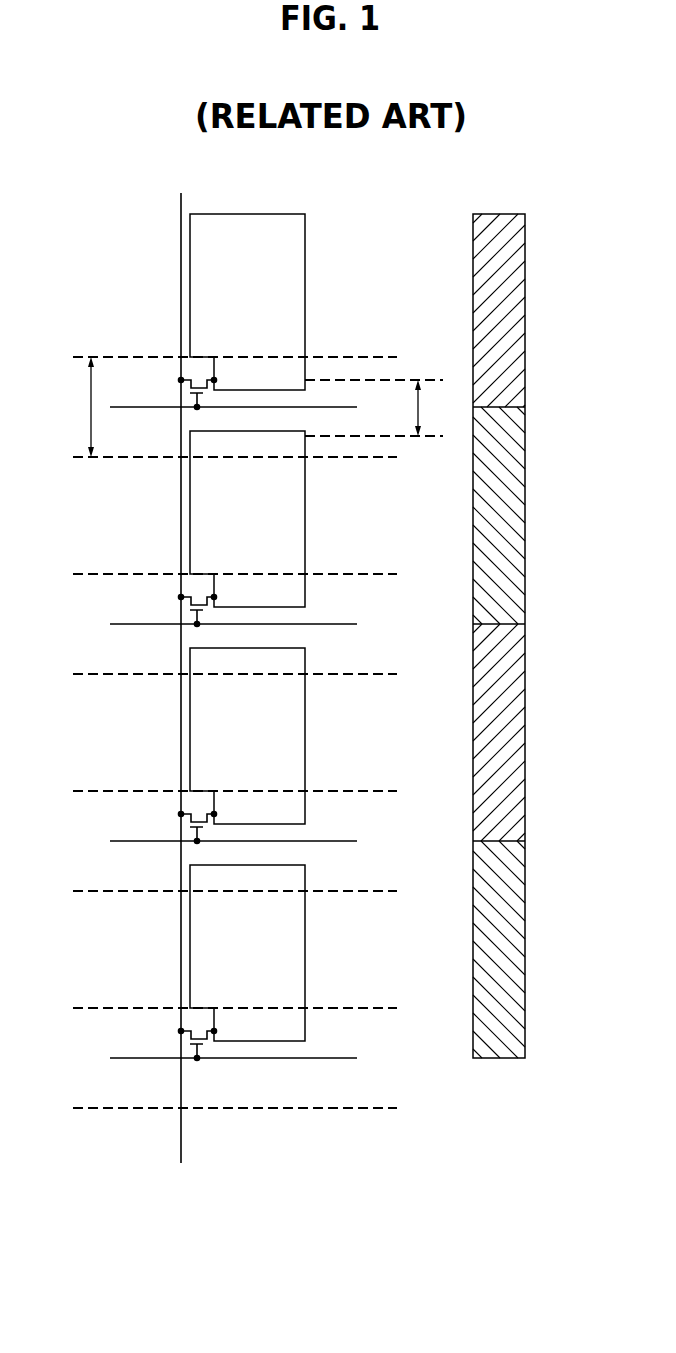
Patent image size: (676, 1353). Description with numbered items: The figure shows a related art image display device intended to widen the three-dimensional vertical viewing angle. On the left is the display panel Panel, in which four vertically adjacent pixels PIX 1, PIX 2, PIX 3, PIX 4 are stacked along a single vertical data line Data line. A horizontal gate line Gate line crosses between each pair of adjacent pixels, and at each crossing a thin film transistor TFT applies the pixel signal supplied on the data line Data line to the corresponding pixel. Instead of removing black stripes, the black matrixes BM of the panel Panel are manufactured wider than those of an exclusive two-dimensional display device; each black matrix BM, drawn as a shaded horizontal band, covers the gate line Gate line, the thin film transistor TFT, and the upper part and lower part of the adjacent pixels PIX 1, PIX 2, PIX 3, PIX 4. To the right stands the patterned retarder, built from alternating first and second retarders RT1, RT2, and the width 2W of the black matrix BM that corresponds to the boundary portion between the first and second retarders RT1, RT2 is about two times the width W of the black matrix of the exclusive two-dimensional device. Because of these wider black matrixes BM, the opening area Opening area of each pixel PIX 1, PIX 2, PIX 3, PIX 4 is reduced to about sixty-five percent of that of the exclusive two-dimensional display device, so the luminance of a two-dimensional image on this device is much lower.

The black matrix BM is at (357, 362).
The first retarder RT1 is at (518, 327).
The second retarder RT2 is at (518, 531).
The thin film transistor TFT is at (218, 1056).
The pixel PIX 1 is at (247, 302).
The pixel PIX 2 is at (247, 519).
The pixel PIX 3 is at (247, 736).
The pixel PIX 4 is at (247, 953).
The gate line Gate line is at (142, 1062).
The data line Data line is at (182, 1143).
The display panel Panel is at (254, 719).
The opening area Opening area is at (297, 536).
The width of the black matrix 2W is at (80, 407).
The width of the black matrix of the exclusive 2D display device W is at (427, 408).